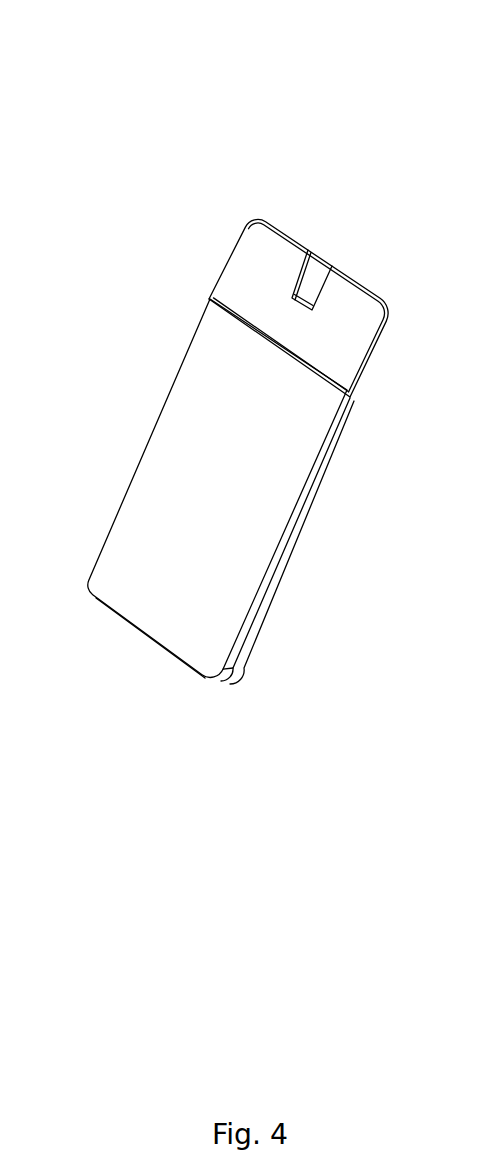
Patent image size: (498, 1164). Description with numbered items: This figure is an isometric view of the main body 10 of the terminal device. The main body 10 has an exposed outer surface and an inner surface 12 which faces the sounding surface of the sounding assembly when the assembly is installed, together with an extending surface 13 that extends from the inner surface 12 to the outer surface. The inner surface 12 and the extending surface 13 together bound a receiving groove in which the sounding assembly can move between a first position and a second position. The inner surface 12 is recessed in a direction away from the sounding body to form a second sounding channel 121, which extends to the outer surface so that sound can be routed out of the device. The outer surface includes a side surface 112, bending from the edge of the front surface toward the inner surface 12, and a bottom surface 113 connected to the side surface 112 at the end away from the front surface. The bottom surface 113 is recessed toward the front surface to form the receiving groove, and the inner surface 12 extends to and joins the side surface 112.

The main body 10 is at (72, 53).
The inner surface 12 is at (265, 304).
The second sounding channel 121 is at (307, 288).
The extending surface 13 is at (214, 297).
The side surface 112 is at (312, 495).
The bottom surface 113 is at (243, 553).